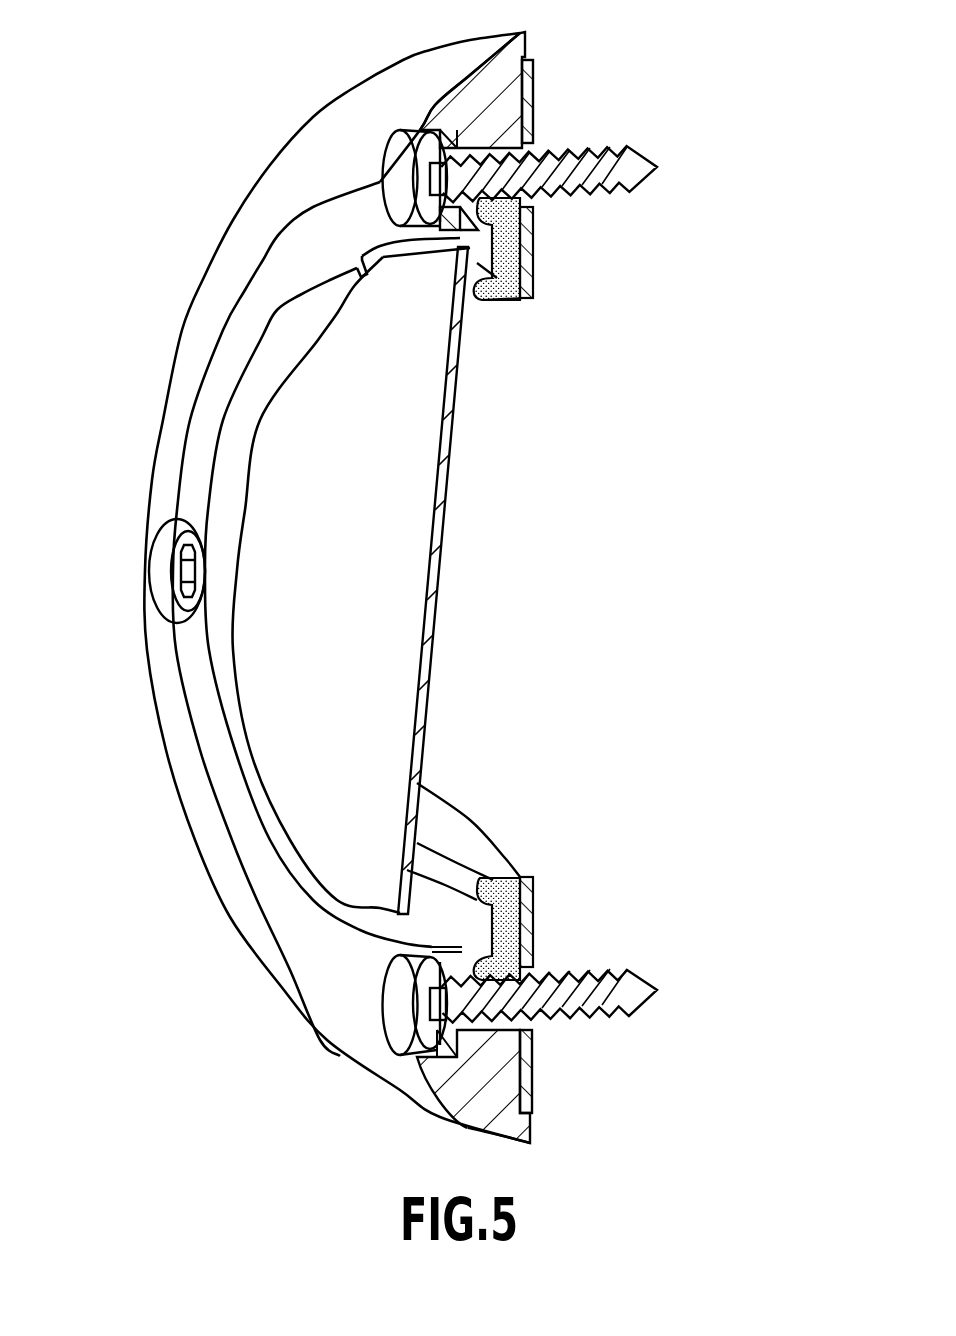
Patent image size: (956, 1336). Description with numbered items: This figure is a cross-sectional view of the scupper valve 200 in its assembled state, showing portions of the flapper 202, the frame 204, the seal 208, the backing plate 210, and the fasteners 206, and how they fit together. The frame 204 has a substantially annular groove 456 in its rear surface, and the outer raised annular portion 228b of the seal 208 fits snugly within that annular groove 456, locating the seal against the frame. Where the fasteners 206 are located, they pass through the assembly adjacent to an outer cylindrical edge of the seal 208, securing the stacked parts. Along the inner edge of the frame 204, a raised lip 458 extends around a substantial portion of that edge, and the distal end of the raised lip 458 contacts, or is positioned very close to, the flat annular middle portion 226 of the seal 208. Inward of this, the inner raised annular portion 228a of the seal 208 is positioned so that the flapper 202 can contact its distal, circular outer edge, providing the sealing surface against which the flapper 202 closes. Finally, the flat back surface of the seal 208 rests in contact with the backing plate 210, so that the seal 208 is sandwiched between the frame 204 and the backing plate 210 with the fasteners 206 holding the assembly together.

The scupper valve 200 is at (180, 148).
The flapper 202 is at (398, 542).
The frame 204 is at (213, 850).
The fasteners 206 is at (640, 165).
The seal 208 is at (497, 300).
The backing plate 210 is at (535, 73).
The flat annular middle portion 226 is at (523, 298).
The inner raised annular portion 228a is at (443, 877).
The outer raised annular portion 228b is at (535, 230).
The annular groove 456 is at (460, 243).
The raised lip 458 is at (510, 242).